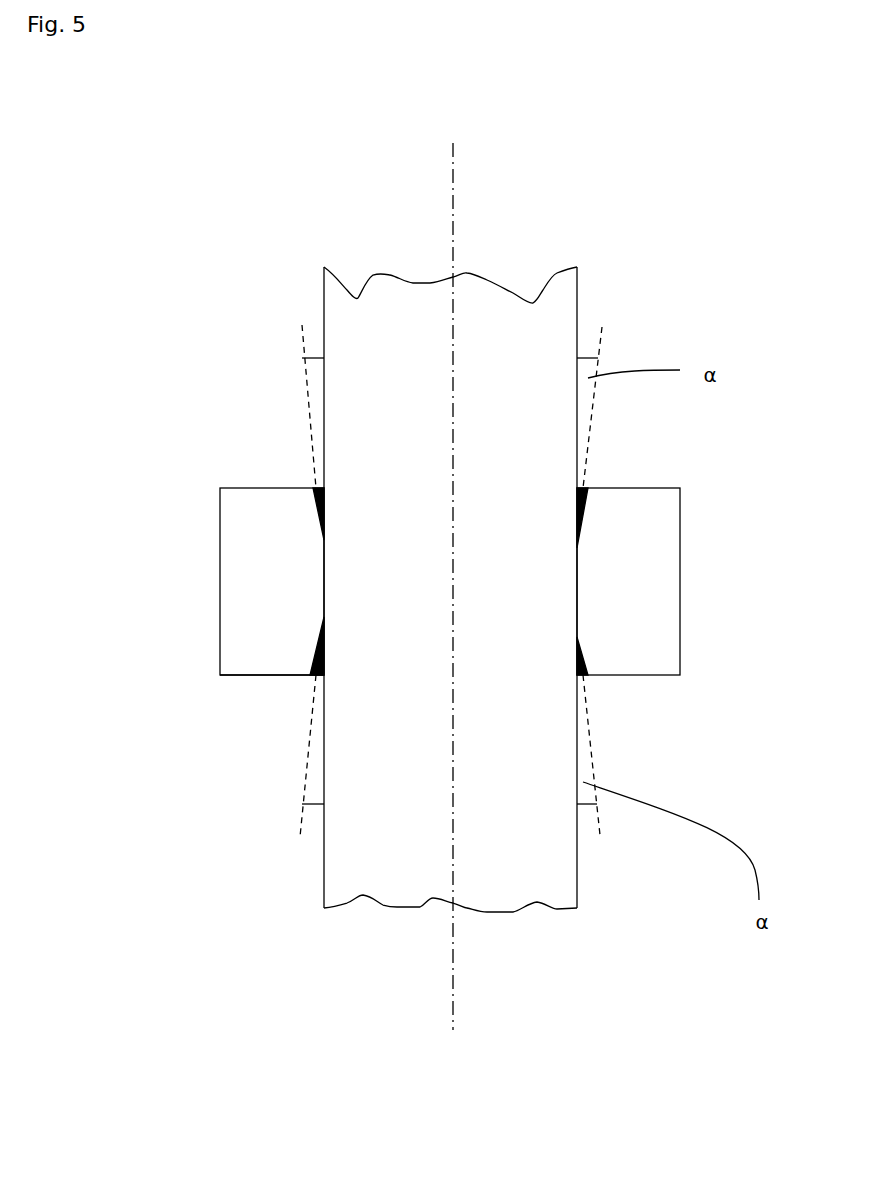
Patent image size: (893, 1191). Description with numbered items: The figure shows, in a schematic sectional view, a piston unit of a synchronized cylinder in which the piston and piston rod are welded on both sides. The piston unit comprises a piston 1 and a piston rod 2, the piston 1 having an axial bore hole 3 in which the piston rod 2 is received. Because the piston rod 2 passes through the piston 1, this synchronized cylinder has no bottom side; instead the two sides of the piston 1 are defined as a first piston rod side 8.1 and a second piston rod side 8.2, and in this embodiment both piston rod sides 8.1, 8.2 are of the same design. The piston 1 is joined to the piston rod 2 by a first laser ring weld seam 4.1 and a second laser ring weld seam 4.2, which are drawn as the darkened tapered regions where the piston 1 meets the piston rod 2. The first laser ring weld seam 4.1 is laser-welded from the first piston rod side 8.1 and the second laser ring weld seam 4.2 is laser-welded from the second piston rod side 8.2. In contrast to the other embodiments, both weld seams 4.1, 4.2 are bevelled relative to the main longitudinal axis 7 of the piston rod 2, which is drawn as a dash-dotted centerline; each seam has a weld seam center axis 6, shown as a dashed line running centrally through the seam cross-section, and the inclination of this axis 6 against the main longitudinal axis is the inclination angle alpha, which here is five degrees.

The piston 1 is at (280, 548).
The piston rod 2 is at (523, 367).
The axial bore hole 3 is at (298, 467).
The first laser ring weld seam 4.1 is at (587, 510).
The second laser ring weld seam 4.2 is at (582, 643).
The weld seam center axis 6 is at (600, 342).
The central axis 7 is at (453, 225).
The first piston rod side 8.1 is at (643, 486).
The second piston rod side 8.2 is at (233, 677).